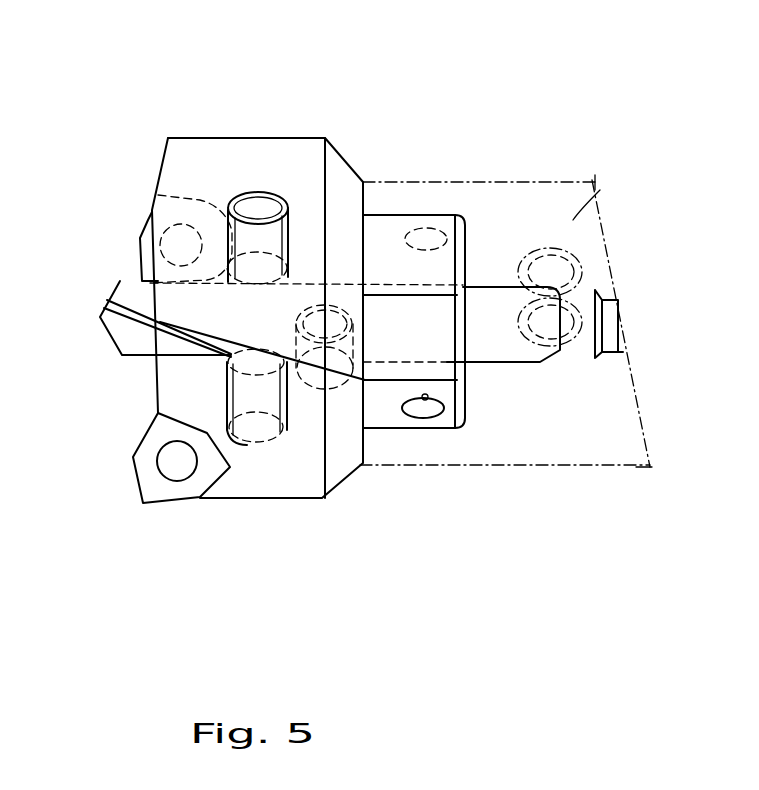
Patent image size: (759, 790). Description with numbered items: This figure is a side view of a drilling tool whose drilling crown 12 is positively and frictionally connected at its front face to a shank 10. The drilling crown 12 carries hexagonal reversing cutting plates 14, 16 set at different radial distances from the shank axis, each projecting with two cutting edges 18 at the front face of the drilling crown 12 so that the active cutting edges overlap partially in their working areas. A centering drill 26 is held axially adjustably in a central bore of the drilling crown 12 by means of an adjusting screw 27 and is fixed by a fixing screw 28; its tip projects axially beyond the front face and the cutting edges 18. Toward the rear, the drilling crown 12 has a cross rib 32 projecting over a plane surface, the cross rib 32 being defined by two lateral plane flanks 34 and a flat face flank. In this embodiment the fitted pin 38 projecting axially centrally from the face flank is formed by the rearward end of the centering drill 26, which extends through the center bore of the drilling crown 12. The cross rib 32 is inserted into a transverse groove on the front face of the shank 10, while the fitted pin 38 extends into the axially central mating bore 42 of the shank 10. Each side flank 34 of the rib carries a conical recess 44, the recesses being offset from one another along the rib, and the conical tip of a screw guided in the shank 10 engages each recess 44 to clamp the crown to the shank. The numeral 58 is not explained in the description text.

The shank 10 is at (610, 185).
The drilling crown 12 is at (305, 157).
The reversing cutting plate 14 is at (200, 477).
The reversing cutting plate 16 is at (148, 220).
The cutting edge 18 is at (135, 483).
The centering drill 26 is at (124, 290).
The adjusting screw 27 is at (577, 263).
The fixing screw 28 is at (343, 390).
The cross rib 32 is at (387, 227).
The lateral plane flank 34 is at (437, 368).
The fitted pin 38 is at (493, 298).
The mating bore 42 is at (582, 352).
The conical recess 44 is at (430, 412).
The guide pin 58 is at (253, 205).